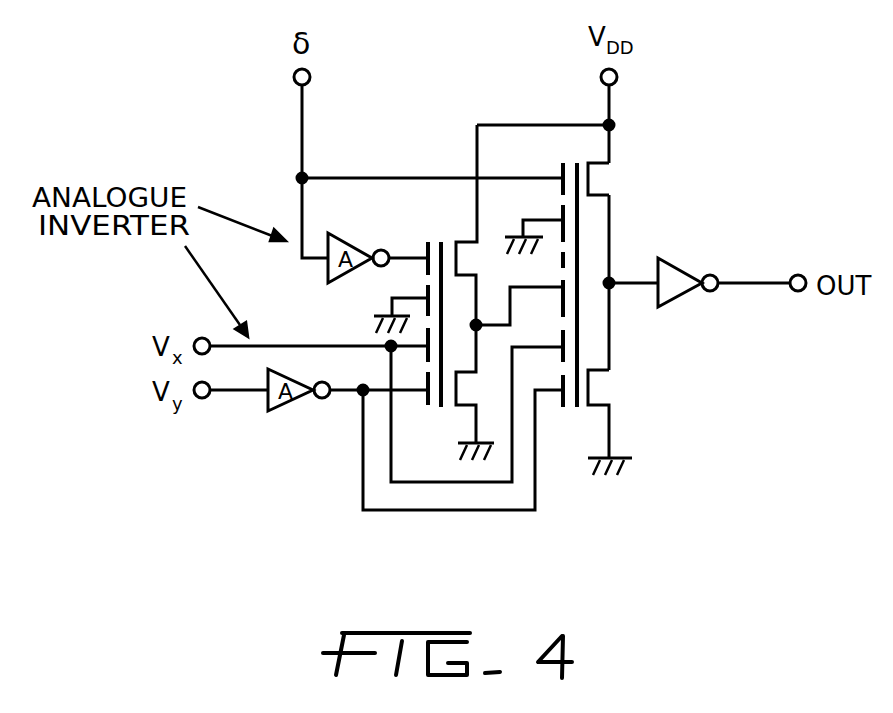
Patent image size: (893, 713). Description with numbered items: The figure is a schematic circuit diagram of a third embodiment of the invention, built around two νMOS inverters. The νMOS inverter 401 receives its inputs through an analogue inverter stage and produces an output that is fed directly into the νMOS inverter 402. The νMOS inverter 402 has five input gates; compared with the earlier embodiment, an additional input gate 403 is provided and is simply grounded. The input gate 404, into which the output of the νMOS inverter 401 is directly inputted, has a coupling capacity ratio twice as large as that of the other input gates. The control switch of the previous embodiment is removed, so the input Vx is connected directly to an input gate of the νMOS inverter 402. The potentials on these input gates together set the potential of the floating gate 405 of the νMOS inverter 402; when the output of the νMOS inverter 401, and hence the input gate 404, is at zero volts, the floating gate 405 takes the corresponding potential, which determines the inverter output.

The νMOS inverter 401 is at (470, 216).
The νMOS inverter 402 is at (575, 140).
The input gate 403 is at (579, 213).
The input gate 404 is at (567, 263).
The floating gate 405 is at (575, 409).